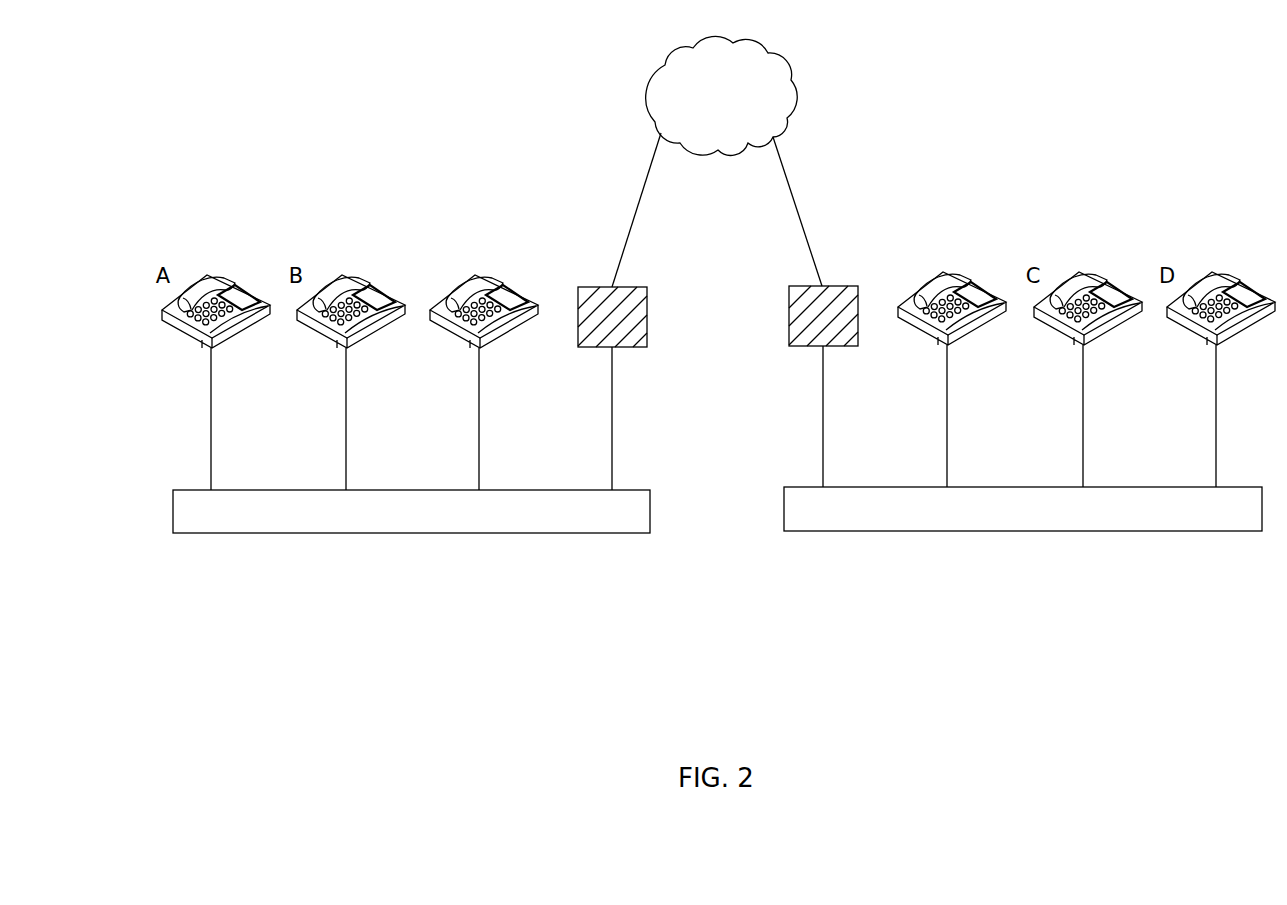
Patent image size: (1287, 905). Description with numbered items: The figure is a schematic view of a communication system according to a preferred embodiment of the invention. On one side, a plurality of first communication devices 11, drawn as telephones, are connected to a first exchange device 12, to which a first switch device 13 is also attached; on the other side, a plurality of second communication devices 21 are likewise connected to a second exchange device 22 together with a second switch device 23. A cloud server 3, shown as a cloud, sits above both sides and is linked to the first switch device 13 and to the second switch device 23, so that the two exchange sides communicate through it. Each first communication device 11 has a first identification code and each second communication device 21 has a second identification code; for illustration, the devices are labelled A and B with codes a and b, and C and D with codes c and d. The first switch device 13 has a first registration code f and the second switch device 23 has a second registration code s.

The cloud server 3 is at (786, 61).
The first communication devices 11 is at (222, 277).
The first exchange device 12 is at (410, 533).
The first switch device 13 is at (586, 287).
The second communication devices 21 is at (958, 274).
The second exchange device 22 is at (1020, 531).
The second switch device 23 is at (838, 286).